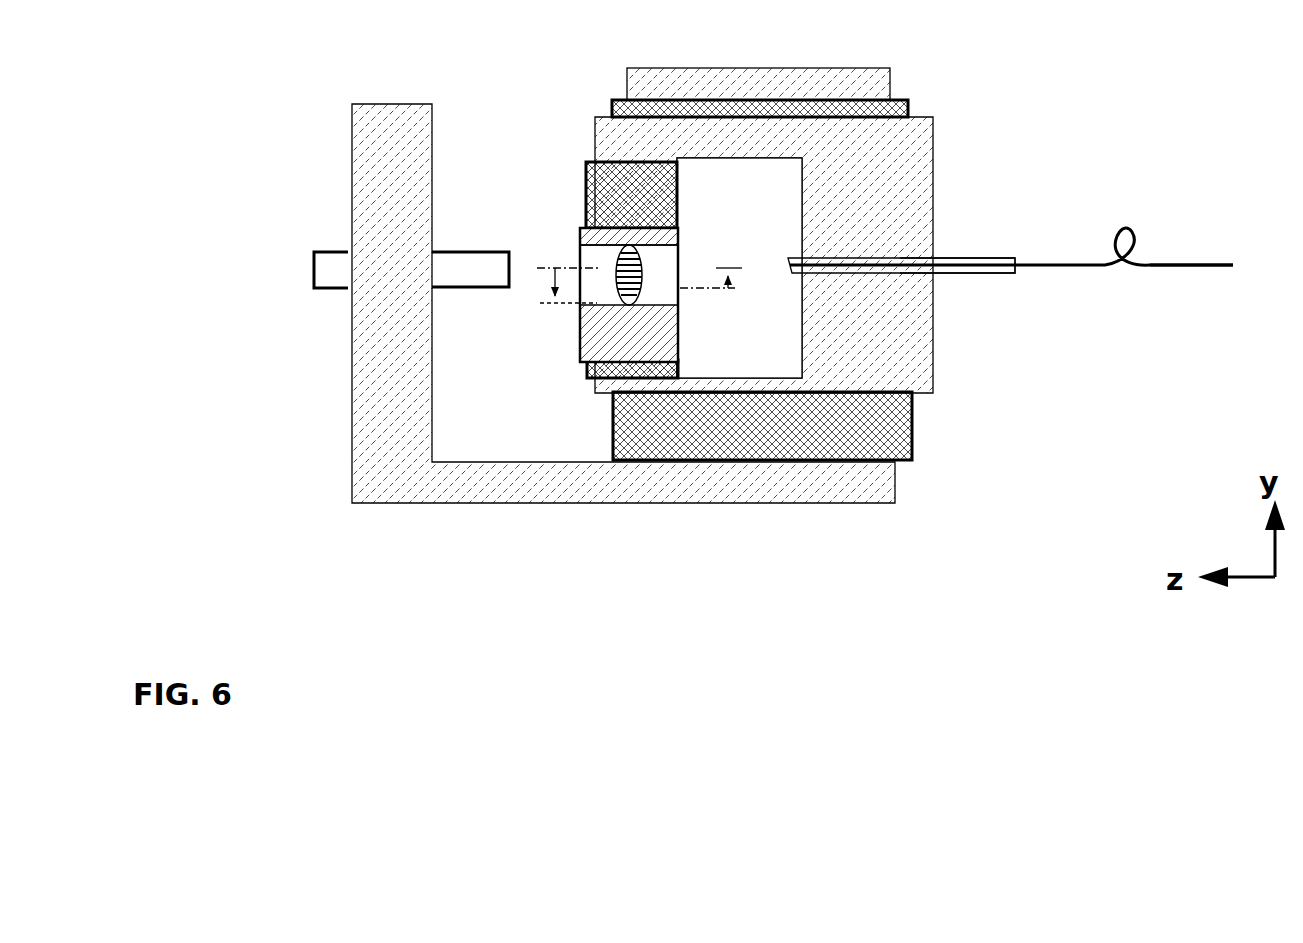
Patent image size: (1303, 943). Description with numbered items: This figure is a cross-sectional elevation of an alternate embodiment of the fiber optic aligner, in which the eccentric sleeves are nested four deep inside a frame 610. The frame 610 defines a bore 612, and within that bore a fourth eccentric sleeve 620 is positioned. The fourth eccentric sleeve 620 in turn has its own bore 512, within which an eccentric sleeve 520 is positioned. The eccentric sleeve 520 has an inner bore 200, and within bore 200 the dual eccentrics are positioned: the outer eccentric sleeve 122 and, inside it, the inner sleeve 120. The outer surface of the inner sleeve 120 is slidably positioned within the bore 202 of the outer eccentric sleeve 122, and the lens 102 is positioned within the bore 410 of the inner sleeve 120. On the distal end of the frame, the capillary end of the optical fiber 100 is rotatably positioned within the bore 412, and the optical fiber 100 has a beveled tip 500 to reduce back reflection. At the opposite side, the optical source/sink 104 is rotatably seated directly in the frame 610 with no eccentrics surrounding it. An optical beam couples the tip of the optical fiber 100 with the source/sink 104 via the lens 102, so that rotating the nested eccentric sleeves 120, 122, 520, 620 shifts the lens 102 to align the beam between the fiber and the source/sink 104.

The optical fiber 100 is at (1148, 262).
The lens 102 is at (640, 285).
The optical source/sink 104 is at (333, 262).
The inner sleeve 120 is at (580, 243).
The outer eccentric sleeve 122 is at (586, 178).
The bore 200 is at (754, 166).
The bore 202 is at (670, 240).
The bore 410 is at (658, 251).
The bore 412 is at (936, 261).
The beveled tip 500 is at (791, 260).
The bore 512 is at (887, 121).
The eccentric sleeve 520 is at (910, 205).
The frame 610 is at (627, 79).
The bore 612 is at (886, 101).
The fourth eccentric sleeve 620 is at (908, 107).